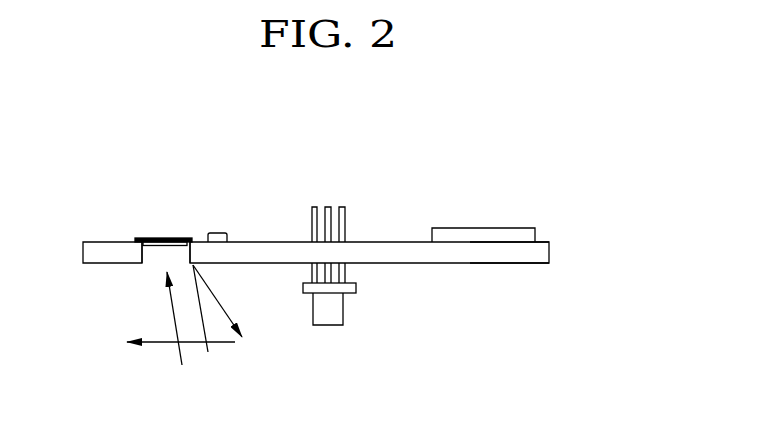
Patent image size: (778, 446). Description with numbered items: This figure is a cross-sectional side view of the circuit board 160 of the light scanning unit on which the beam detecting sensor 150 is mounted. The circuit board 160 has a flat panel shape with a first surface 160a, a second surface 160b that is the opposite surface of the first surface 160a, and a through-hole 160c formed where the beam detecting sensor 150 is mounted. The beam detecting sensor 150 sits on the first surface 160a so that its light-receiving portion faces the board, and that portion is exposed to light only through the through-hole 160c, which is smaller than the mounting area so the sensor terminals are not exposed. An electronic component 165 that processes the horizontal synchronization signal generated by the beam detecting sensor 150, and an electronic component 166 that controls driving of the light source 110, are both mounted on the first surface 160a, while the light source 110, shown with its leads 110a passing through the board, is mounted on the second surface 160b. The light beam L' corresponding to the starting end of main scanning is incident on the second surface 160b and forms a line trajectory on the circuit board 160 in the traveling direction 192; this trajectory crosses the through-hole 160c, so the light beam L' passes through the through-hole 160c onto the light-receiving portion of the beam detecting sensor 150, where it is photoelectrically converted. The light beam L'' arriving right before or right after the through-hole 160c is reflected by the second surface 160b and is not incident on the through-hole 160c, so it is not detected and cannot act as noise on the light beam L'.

The light source 110 is at (330, 325).
The lead pins of light source 110a is at (345, 213).
The beam detecting sensor 150 is at (164, 237).
The circuit board 160 is at (553, 249).
The first surface 160a is at (543, 233).
The second surface 160b is at (542, 267).
The through-hole 160c is at (142, 263).
The electronic component 165 is at (218, 233).
The electronic component 166 is at (480, 232).
The traveling direction 192 is at (153, 343).
The light beam L' is at (177, 349).
The light beam L'' is at (220, 332).